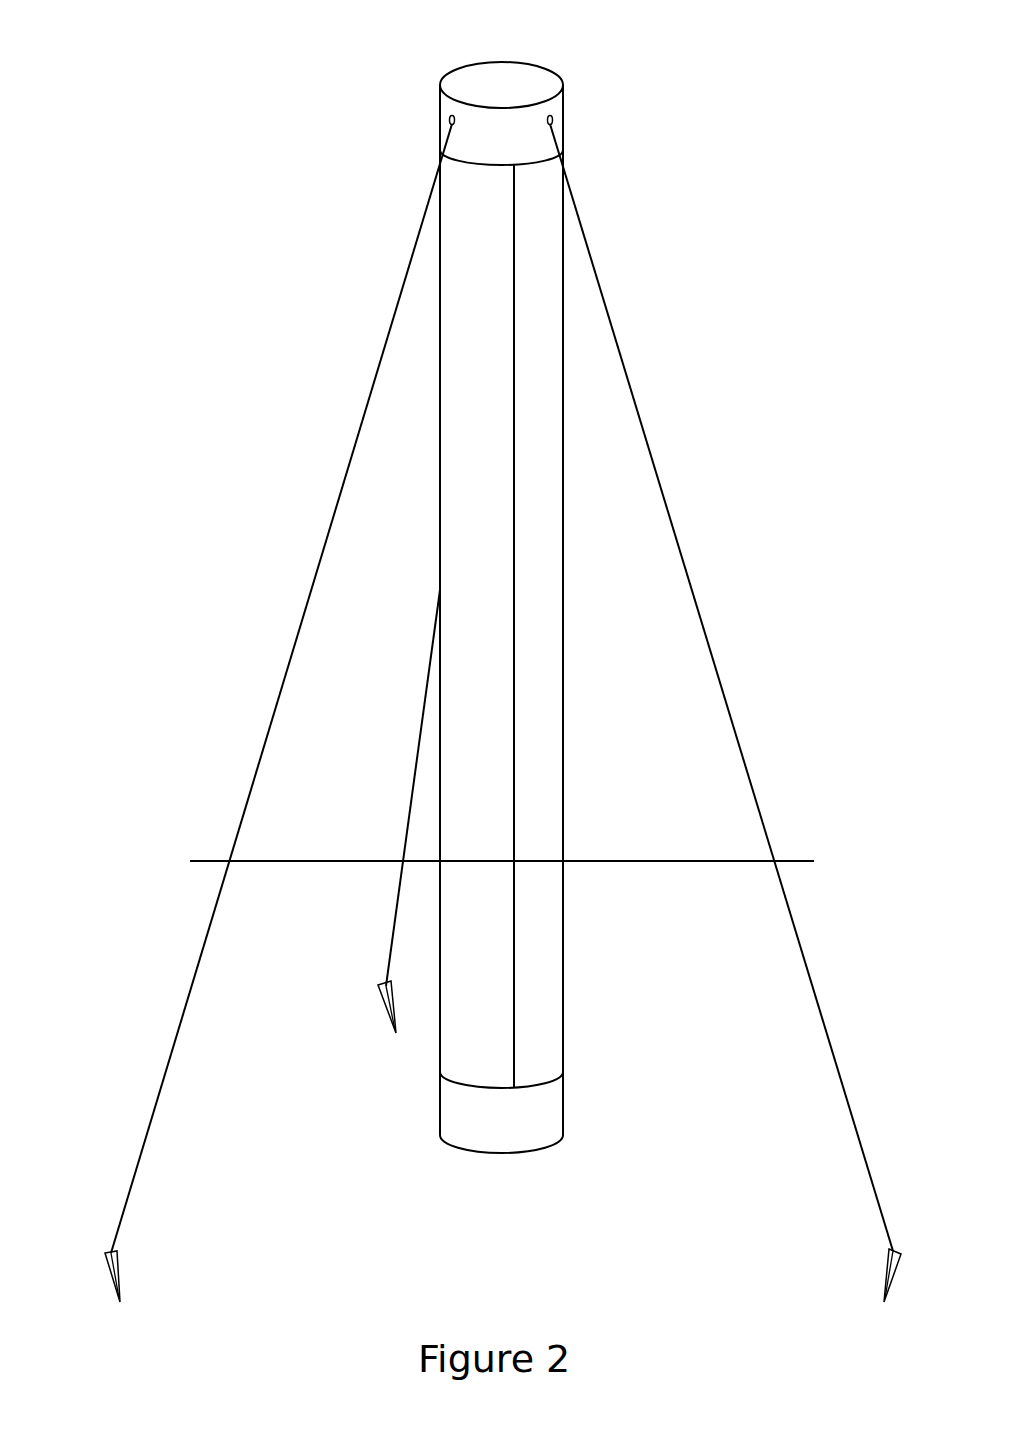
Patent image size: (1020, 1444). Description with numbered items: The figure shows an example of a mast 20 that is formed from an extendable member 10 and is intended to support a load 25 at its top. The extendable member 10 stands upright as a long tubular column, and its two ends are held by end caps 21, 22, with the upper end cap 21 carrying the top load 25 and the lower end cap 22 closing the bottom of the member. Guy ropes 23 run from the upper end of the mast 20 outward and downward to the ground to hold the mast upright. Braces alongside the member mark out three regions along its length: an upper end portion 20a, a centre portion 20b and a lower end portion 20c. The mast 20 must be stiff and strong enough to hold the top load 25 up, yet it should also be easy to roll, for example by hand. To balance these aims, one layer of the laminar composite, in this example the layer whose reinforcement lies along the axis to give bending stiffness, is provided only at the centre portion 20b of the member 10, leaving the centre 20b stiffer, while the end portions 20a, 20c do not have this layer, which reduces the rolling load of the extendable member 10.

The extendable member 10 is at (460, 1032).
The mast 20 is at (636, 178).
The end portion 20a is at (121, 115).
The centre portion 20b is at (121, 390).
The end portion 20c is at (121, 813).
The end cap 21 is at (538, 86).
The end cap 22 is at (473, 1133).
The guy ropes 23 is at (728, 702).
The load 25 is at (490, 82).